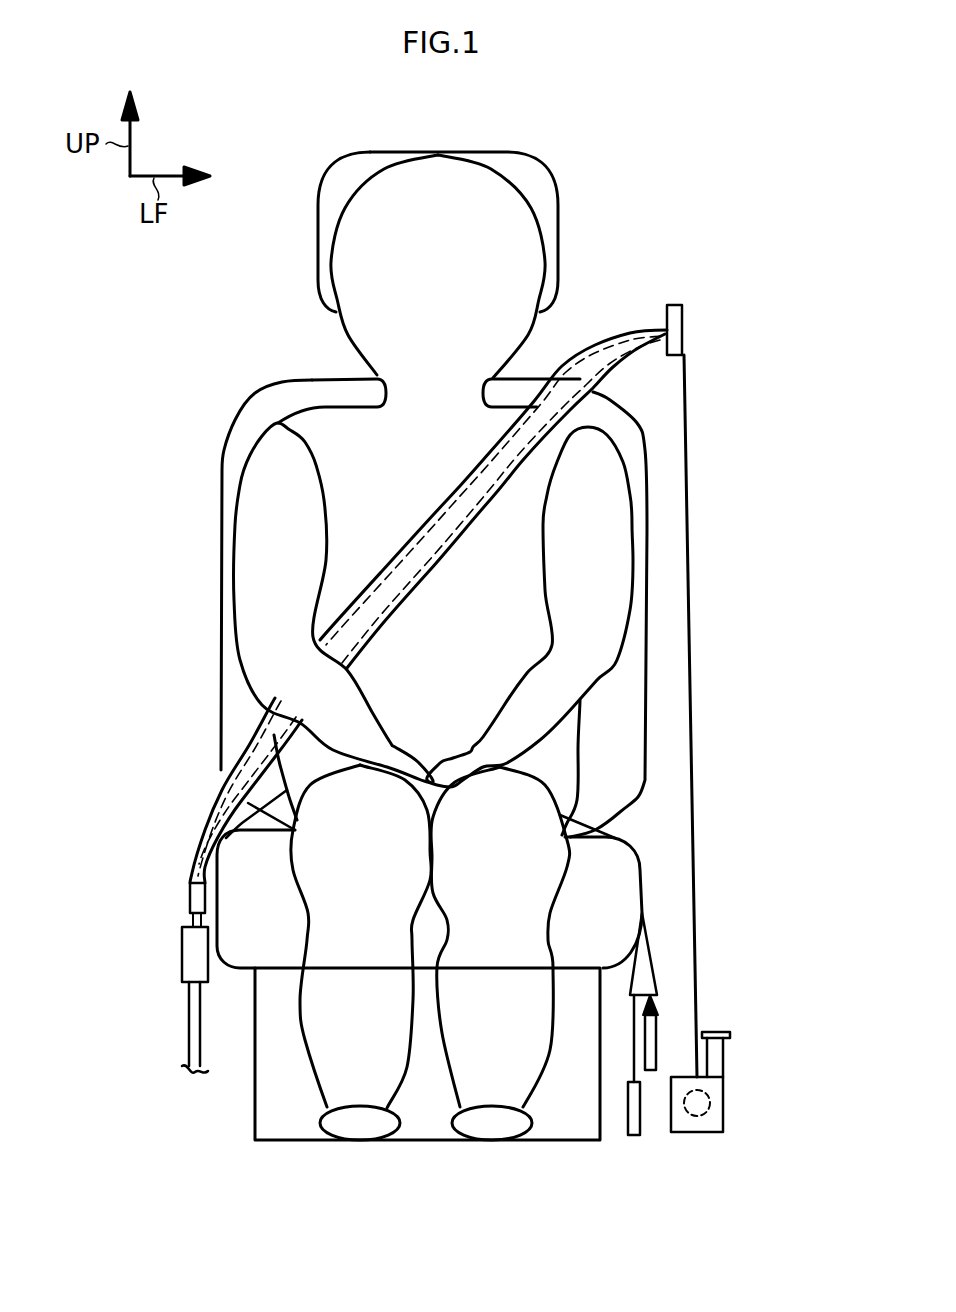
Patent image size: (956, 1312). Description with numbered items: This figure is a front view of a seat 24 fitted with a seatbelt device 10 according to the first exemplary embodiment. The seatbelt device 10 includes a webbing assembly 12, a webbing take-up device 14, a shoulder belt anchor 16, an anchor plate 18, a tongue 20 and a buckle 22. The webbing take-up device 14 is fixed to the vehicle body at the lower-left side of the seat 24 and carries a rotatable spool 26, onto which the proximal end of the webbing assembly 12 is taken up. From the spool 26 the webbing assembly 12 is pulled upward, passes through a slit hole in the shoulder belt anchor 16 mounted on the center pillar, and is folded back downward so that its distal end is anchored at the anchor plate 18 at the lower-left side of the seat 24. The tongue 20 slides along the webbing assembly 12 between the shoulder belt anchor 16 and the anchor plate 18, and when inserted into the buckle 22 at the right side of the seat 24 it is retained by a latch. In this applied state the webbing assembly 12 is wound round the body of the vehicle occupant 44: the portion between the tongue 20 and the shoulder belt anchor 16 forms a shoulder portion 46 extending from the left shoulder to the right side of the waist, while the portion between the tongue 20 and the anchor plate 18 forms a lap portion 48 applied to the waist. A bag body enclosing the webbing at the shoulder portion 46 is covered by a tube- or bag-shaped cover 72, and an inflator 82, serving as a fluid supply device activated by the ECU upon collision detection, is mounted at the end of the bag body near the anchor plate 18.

The seatbelt device 10 is at (694, 743).
The webbing assembly 12 is at (701, 915).
The webbing take-up device 14 is at (724, 1105).
The shoulder belt anchor 16 is at (684, 323).
The anchor plate 18 is at (628, 1110).
The tongue 20 is at (190, 900).
The buckle 22 is at (182, 946).
The seat 24 is at (394, 646).
The spool 26 is at (706, 1118).
The vehicle occupant 44 is at (338, 433).
The shoulder portion 46 is at (428, 606).
The lap portion 48 is at (586, 817).
The cover 72 is at (462, 540).
The inflator 82 is at (650, 1050).